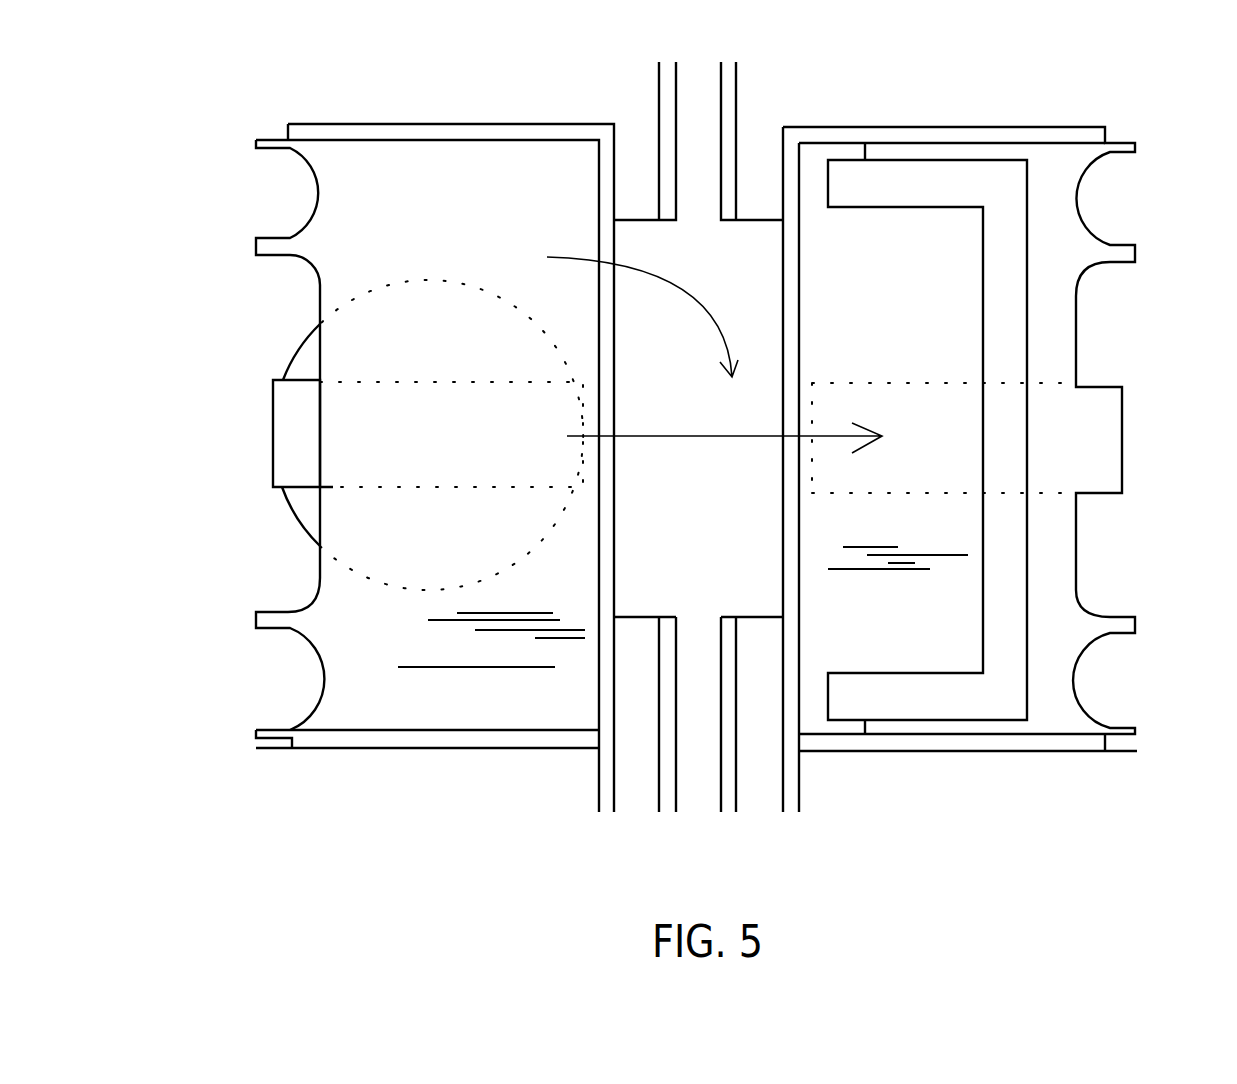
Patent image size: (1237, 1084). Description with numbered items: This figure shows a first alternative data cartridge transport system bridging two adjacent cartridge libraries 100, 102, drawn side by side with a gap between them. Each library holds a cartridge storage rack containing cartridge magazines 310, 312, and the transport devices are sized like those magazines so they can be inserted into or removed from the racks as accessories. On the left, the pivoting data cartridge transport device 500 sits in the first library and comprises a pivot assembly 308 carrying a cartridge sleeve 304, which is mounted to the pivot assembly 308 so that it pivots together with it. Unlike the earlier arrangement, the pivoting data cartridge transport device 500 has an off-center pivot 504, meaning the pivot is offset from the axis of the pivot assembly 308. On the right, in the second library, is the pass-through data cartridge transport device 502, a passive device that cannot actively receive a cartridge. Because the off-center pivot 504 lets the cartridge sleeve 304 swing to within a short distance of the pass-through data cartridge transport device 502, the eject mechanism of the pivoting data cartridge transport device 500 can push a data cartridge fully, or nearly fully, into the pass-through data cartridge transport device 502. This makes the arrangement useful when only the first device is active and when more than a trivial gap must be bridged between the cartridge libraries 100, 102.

The cartridge library 100 is at (302, 826).
The cartridge library 102 is at (1075, 830).
The cartridge sleeve 304 is at (410, 378).
The pivot assembly 308 is at (388, 285).
The cartridge magazine 310 is at (483, 714).
The cartridge magazine 312 is at (937, 659).
The pivoting data cartridge transport device 500 is at (343, 577).
The pass-through data cartridge transport device 502 is at (842, 373).
The off-center pivot 504 is at (540, 437).